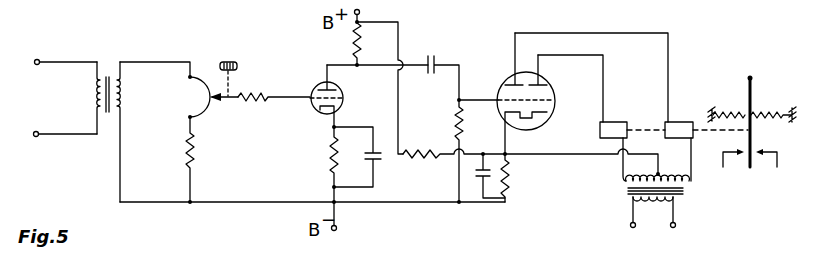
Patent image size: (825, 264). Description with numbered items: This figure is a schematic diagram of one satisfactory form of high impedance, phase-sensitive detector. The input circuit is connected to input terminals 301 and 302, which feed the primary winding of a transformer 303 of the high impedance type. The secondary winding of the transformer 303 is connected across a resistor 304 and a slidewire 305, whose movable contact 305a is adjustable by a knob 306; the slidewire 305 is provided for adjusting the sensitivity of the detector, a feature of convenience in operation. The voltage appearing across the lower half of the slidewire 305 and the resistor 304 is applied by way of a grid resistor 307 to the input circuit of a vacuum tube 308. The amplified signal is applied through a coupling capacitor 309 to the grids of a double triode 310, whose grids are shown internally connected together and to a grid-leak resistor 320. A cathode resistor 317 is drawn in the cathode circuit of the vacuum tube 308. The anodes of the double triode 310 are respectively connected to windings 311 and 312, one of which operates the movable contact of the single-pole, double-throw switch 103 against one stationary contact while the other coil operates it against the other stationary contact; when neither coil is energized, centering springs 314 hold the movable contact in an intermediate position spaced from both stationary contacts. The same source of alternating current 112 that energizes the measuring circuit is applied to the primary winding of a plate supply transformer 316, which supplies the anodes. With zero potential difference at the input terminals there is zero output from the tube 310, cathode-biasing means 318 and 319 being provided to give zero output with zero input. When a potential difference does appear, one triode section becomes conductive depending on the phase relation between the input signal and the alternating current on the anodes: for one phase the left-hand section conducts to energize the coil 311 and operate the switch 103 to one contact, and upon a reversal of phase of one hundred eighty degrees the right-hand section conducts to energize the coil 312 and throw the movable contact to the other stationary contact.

The input terminal 301 is at (35, 60).
The input terminal 302 is at (35, 137).
The transformer 303 is at (108, 76).
The resistor 304 is at (186, 150).
The slidewire 305 is at (203, 80).
The movable contact 305a is at (218, 100).
The knob 306 is at (238, 64).
The grid resistor 307 is at (262, 101).
The vacuum tube 308 is at (344, 100).
The coupling capacitor 309 is at (433, 54).
The double triode 310 is at (553, 96).
The winding 311 is at (680, 121).
The winding 312 is at (612, 121).
The centering springs 314 is at (768, 111).
The plate supply transformer 316 is at (680, 193).
The cathode resistor 317 is at (347, 168).
The cathode-biasing means 318 is at (507, 188).
The cathode-biasing means 319 is at (427, 162).
The grid-leak resistor 320 is at (457, 138).
The single-pole, double-throw switch 103 is at (753, 135).
The source of alternating current 112 is at (654, 233).